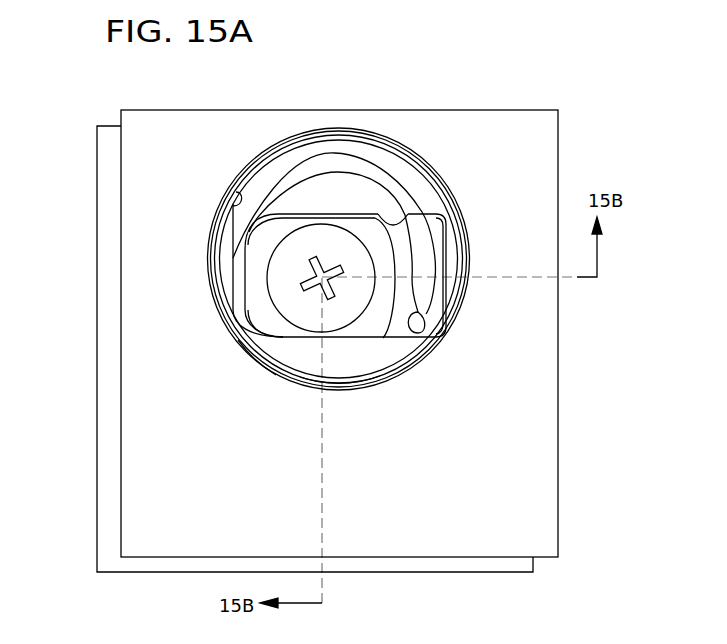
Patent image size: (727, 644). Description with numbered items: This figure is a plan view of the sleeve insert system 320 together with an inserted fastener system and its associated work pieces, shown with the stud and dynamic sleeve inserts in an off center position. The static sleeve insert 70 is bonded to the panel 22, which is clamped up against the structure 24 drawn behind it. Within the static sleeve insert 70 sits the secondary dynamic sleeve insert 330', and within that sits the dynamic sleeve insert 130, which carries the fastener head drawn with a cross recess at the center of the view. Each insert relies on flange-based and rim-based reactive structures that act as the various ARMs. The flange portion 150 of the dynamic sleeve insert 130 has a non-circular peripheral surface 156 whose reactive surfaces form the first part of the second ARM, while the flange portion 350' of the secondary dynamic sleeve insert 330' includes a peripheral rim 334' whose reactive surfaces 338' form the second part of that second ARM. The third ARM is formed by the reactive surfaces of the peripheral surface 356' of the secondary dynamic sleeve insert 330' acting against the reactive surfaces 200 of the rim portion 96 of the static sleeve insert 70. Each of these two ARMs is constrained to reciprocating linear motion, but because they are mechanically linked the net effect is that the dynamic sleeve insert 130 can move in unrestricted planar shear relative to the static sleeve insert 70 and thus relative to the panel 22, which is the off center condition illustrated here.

The panel 22 is at (537, 427).
The structure 24 is at (105, 437).
The static sleeve insert 70 is at (400, 158).
The rim portion 96 is at (218, 262).
The system 320 is at (184, 87).
The reactive surfaces 200 is at (236, 193).
The dynamic sleeve insert 130 is at (255, 283).
The flange portion 150 is at (403, 268).
The peripheral surface 156 is at (387, 258).
The peripheral surface 356' is at (315, 195).
The reactive surfaces 338' is at (446, 181).
The peripheral rim 334' is at (468, 327).
The secondary dynamic sleeve insert 330' is at (248, 375).
The flange portion 350' is at (367, 392).